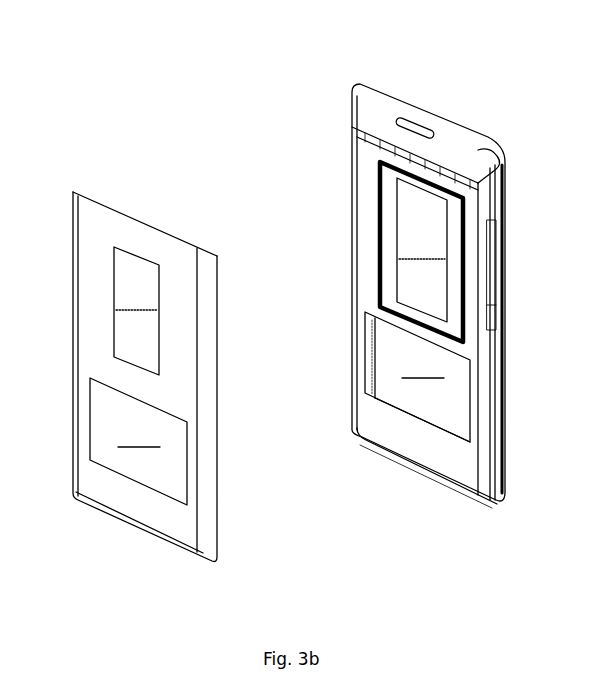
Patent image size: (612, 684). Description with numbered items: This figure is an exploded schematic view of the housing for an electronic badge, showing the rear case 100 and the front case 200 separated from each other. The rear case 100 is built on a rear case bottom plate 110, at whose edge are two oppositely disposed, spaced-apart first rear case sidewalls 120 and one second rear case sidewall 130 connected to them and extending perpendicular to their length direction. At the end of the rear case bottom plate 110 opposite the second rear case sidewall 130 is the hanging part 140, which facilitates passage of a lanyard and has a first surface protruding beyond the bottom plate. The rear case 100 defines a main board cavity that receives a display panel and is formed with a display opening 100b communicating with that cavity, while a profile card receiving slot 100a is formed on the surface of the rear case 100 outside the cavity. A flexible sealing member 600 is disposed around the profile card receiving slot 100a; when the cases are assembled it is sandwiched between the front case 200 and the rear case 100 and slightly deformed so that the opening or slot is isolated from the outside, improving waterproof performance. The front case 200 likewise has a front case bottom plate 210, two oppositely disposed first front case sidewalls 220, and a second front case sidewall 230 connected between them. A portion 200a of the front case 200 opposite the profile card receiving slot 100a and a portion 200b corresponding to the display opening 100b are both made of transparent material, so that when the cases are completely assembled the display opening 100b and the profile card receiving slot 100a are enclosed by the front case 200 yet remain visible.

The rear case 100 is at (437, 295).
The rear case bottom plate 110 is at (368, 205).
The first rear case sidewalls 120 is at (490, 397).
The second rear case sidewall 130 is at (497, 498).
The hanging part 140 is at (455, 135).
The profile card receiving slot 100a is at (422, 250).
The display opening 100b is at (417, 377).
The flexible sealing member 600 is at (382, 187).
The front case 200 is at (158, 364).
The front case bottom plate 210 is at (190, 252).
The first front case sidewalls 220 is at (210, 438).
The second front case sidewall 230 is at (173, 545).
The transparent portion opposite the profile card receiving slot 200a is at (137, 311).
The transparent portion corresponding to the display opening 200b is at (138, 441).